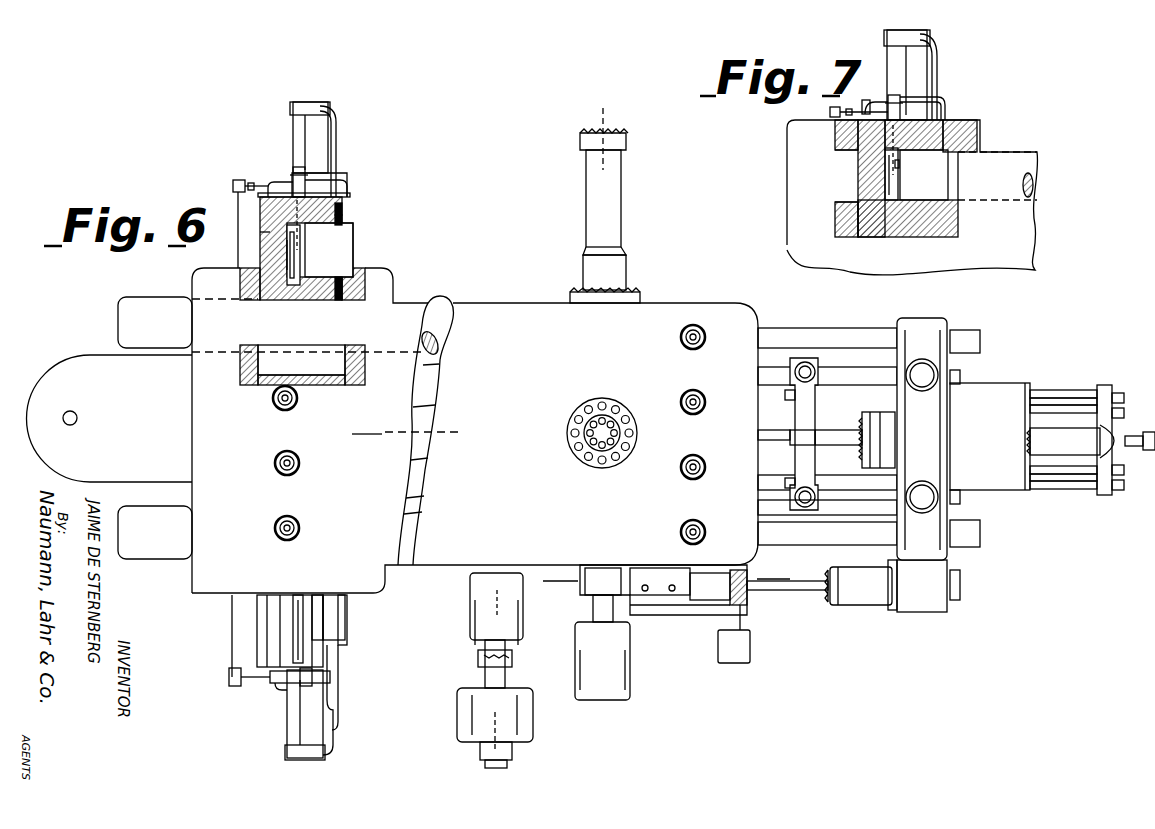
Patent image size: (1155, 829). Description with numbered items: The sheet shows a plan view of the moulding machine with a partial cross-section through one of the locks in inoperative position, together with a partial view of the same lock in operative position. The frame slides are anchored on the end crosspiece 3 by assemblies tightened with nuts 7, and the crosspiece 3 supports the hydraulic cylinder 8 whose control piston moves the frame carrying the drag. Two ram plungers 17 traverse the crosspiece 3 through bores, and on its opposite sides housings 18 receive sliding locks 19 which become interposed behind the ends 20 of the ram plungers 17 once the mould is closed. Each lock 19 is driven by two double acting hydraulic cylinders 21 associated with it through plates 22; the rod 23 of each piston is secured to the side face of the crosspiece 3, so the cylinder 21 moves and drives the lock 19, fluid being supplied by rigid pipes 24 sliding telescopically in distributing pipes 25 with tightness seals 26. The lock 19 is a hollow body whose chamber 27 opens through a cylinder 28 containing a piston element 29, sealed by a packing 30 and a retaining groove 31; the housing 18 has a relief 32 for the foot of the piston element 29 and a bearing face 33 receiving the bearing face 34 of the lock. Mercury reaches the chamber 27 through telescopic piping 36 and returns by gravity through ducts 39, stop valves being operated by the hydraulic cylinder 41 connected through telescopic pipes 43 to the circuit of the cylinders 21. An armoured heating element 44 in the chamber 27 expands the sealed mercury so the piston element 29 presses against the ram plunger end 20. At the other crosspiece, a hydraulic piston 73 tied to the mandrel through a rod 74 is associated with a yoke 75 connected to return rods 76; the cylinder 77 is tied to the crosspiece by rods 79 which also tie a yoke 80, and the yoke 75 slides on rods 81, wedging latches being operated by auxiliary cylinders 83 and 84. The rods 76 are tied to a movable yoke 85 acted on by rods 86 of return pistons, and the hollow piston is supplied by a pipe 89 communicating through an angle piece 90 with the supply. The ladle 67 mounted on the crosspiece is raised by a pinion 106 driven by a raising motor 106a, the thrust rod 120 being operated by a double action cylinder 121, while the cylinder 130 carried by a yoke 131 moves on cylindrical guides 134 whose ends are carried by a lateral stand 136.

In FIG. 6, the end crosspiece 3 is at (206, 268).
In FIG. 6, the tightening nut 7 is at (278, 460).
In FIG. 6, the hydraulic cylinder 8 is at (66, 480).
In FIG. 6, the ram plunger 17 is at (157, 310).
In FIG. 7, the ram plunger 17 is at (1030, 162).
In FIG. 6, the housing 18 is at (302, 368).
In FIG. 7, the housing 18 is at (927, 228).
In FIG. 6, the sliding lock 19 is at (262, 212).
In FIG. 7, the sliding lock 19 is at (858, 178).
In FIG. 6, the end of ram plunger 20 is at (118, 322).
In FIG. 6, the double acting hydraulic cylinder 21 is at (310, 127).
In FIG. 7, the double acting hydraulic cylinder 21 is at (888, 50).
In FIG. 6, the plate 22 is at (320, 193).
In FIG. 6, the piston rod 23 is at (302, 652).
In FIG. 6, the rigid pipe 24 is at (335, 148).
In FIG. 7, the rigid pipe 24 is at (926, 57).
In FIG. 6, the distributing pipe 25 is at (327, 610).
In FIG. 6, the tightness seal 26 is at (330, 677).
In FIG. 6, the chamber 27 is at (304, 258).
In FIG. 7, the chamber 27 is at (895, 205).
In FIG. 6, the cylinder 28 is at (335, 212).
In FIG. 6, the piston element 29 is at (354, 247).
In FIG. 7, the piston element 29 is at (940, 155).
In FIG. 6, the packing 30 is at (342, 224).
In FIG. 6, the retaining groove 31 is at (330, 282).
In FIG. 6, the relief 32 is at (354, 292).
In FIG. 6, the bearing face of housing 33 is at (252, 282).
In FIG. 6, the bearing face of lock 34 is at (260, 232).
In FIG. 6, the telescopic piping 36 is at (238, 221).
In FIG. 7, the telescopic piping 36 is at (834, 114).
In FIG. 6, the return duct 39 is at (286, 236).
In FIG. 7, the return duct 39 is at (903, 165).
In FIG. 6, the hydraulic cylinder 41 is at (298, 166).
In FIG. 7, the hydraulic cylinder 41 is at (894, 100).
In FIG. 6, the telescopic pipe 43 is at (328, 178).
In FIG. 7, the telescopic pipe 43 is at (946, 106).
In FIG. 6, the heating element 44 is at (300, 285).
In FIG. 7, the heating element 44 is at (888, 200).
In FIG. 6, the ladle 67 is at (708, 600).
In FIG. 6, the hydraulic piston 73 is at (828, 436).
In FIG. 6, the rod 74 is at (766, 430).
In FIG. 6, the yoke 75 is at (806, 404).
In FIG. 6, the return rod 76 is at (862, 395).
In FIG. 6, the hydraulic cylinder 77 is at (978, 410).
In FIG. 6, the rod 79 is at (769, 340).
In FIG. 6, the yoke 80 is at (922, 330).
In FIG. 6, the rod 81 is at (862, 494).
In FIG. 6, the auxiliary hydraulic cylinder 83 is at (802, 500).
In FIG. 6, the auxiliary hydraulic cylinder 84 is at (922, 508).
In FIG. 6, the movable yoke 85 is at (1108, 390).
In FIG. 6, the rod 86 is at (1068, 406).
In FIG. 6, the pipe 89 is at (1062, 455).
In FIG. 6, the angle piece 90 is at (1145, 448).
In FIG. 6, the pinion 106 is at (747, 600).
In FIG. 6, the raising motor 106a is at (750, 650).
In FIG. 6, the thrust rod 120 is at (813, 592).
In FIG. 6, the double action cylinder 121 is at (871, 597).
In FIG. 6, the hydraulic double action cylinder 130 is at (472, 658).
In FIG. 6, the yoke 131 is at (518, 630).
In FIG. 6, the cylindrical guide 134 is at (506, 673).
In FIG. 6, the stand 136 is at (533, 732).